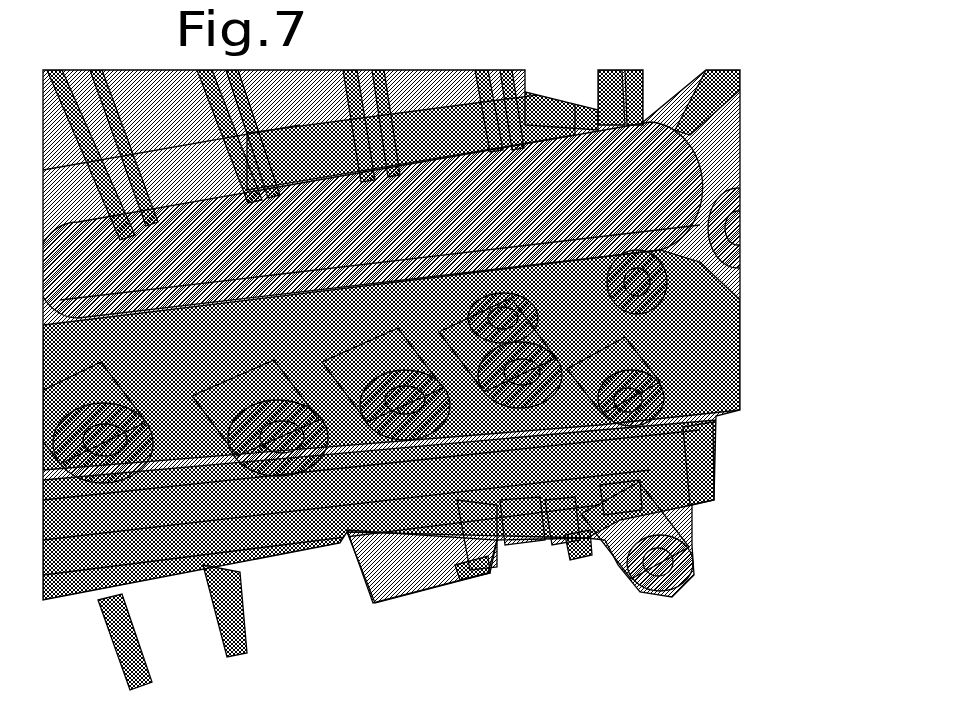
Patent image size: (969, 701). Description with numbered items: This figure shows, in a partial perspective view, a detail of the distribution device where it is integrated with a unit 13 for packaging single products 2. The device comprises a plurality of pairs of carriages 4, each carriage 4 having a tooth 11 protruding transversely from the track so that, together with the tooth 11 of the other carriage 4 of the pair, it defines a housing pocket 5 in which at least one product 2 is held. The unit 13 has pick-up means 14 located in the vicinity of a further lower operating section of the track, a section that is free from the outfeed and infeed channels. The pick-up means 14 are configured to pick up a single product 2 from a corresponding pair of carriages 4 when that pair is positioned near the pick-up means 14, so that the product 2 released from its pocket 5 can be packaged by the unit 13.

The unit for packaging single products 13 is at (542, 198).
The pick-up means 14 is at (624, 497).
The product 2 is at (702, 560).
The tooth 11 is at (470, 500).
The housing pocket 5 is at (523, 540).
The carriage 4 is at (472, 597).